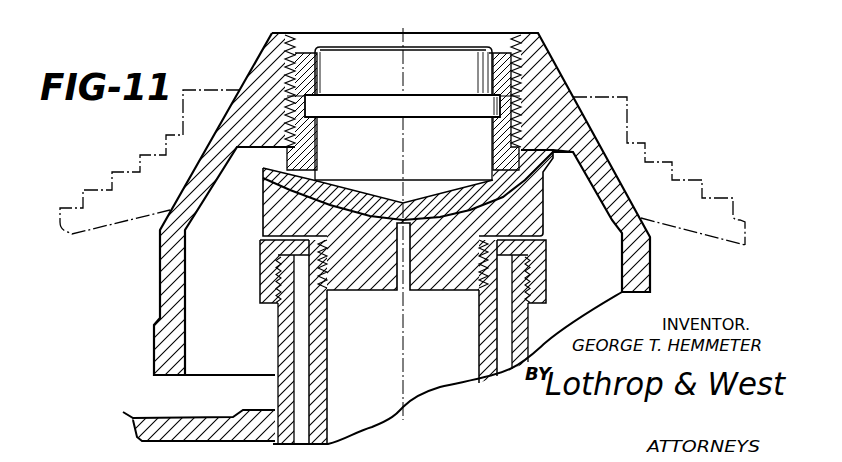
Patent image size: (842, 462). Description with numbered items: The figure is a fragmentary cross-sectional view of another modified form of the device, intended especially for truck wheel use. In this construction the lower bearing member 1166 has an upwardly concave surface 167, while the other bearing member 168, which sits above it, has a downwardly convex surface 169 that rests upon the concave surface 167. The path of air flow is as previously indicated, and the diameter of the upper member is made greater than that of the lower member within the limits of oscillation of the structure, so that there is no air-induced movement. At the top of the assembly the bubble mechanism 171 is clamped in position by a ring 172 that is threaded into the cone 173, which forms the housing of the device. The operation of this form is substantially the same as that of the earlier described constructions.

The bubble mechanism 171 is at (452, 53).
The ring 172 is at (505, 62).
The cone 173 is at (546, 56).
The bearing member 168 is at (517, 148).
The downwardly convex surface 169 is at (470, 216).
The upwardly concave surface 167 is at (297, 183).
The lower bearing member 1166 is at (268, 214).